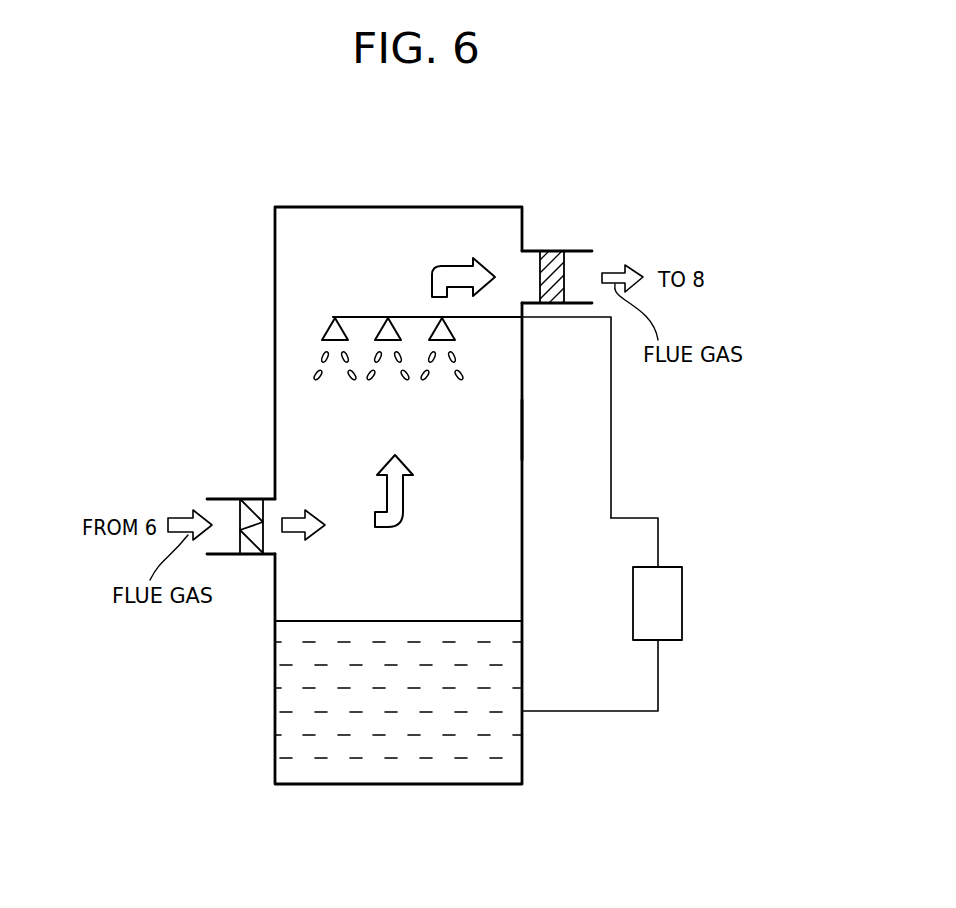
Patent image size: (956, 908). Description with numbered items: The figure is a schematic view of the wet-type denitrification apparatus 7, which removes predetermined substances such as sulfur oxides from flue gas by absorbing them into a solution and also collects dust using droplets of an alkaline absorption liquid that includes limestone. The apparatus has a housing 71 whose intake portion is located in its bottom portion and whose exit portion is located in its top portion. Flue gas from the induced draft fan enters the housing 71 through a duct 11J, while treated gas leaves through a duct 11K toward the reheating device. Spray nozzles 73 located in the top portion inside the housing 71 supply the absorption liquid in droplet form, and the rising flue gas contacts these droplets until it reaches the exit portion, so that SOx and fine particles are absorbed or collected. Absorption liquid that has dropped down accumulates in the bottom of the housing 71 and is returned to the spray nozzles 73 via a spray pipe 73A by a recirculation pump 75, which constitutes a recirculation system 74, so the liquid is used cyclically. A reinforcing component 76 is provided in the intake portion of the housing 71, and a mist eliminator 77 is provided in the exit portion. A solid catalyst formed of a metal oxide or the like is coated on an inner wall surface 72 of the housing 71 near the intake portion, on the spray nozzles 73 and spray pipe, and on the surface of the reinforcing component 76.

The wet-type denitrification apparatus 7 is at (258, 213).
The duct 11J is at (227, 498).
The duct 11K is at (577, 250).
The housing 71 is at (523, 383).
The inner wall surface 72 is at (521, 432).
The spray nozzles 73 is at (325, 330).
The spray pipe 73A is at (363, 316).
The recirculation system 74 is at (647, 493).
The recirculation pump 75 is at (685, 592).
The reinforcing component 76 is at (253, 556).
The mist eliminator 77 is at (553, 258).